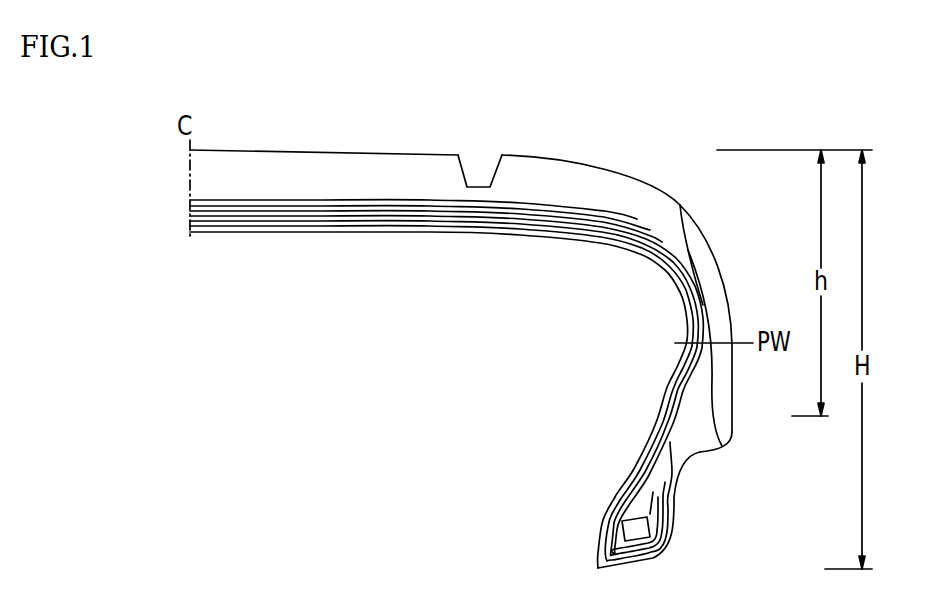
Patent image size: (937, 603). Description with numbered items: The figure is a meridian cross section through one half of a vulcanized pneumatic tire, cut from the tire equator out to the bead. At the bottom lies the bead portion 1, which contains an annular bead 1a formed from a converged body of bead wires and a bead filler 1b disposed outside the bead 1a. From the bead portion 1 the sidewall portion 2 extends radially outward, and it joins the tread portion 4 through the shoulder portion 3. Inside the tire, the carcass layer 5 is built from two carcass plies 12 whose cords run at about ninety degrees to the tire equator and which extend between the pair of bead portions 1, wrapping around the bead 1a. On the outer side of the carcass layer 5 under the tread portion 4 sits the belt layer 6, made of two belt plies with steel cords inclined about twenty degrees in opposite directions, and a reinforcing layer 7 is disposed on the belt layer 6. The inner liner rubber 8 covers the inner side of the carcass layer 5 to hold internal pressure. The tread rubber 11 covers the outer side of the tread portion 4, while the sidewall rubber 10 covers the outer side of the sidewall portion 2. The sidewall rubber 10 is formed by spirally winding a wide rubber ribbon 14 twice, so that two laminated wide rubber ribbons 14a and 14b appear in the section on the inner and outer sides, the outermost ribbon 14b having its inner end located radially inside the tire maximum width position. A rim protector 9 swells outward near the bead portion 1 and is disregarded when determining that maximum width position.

The bead portion 1 is at (688, 514).
The bead 1a is at (623, 528).
The bead filler 1b is at (633, 493).
The sidewall portion 2 is at (745, 290).
The shoulder portion 3 is at (658, 182).
The tread portion 4 is at (379, 148).
The carcass layer 5 is at (498, 223).
The belt layer 6 is at (405, 210).
The reinforcing layer 7 is at (300, 198).
The inner liner rubber 8 is at (605, 243).
The rim protector 9 is at (697, 453).
The sidewall rubber 10 is at (733, 387).
The tread rubber 11 is at (440, 153).
The carcass ply 12 is at (302, 222).
The wide rubber ribbon 14 is at (743, 313).
The wide rubber ribbon 14a is at (700, 280).
The wide rubber ribbon 14b is at (698, 227).